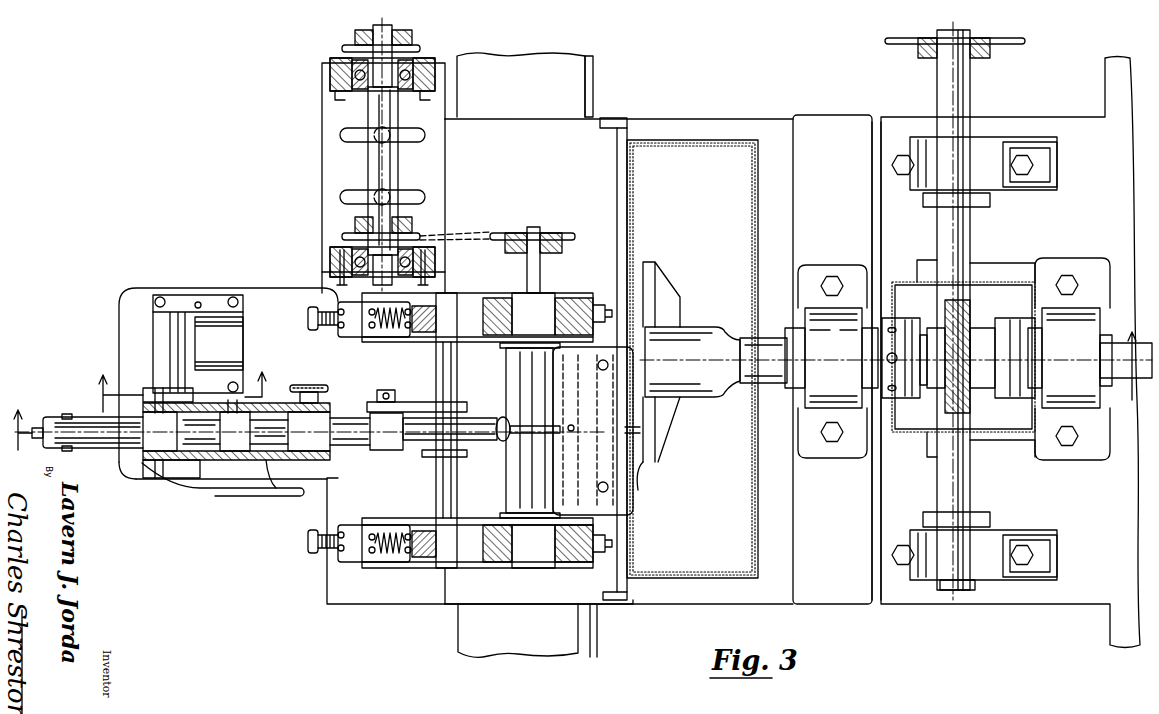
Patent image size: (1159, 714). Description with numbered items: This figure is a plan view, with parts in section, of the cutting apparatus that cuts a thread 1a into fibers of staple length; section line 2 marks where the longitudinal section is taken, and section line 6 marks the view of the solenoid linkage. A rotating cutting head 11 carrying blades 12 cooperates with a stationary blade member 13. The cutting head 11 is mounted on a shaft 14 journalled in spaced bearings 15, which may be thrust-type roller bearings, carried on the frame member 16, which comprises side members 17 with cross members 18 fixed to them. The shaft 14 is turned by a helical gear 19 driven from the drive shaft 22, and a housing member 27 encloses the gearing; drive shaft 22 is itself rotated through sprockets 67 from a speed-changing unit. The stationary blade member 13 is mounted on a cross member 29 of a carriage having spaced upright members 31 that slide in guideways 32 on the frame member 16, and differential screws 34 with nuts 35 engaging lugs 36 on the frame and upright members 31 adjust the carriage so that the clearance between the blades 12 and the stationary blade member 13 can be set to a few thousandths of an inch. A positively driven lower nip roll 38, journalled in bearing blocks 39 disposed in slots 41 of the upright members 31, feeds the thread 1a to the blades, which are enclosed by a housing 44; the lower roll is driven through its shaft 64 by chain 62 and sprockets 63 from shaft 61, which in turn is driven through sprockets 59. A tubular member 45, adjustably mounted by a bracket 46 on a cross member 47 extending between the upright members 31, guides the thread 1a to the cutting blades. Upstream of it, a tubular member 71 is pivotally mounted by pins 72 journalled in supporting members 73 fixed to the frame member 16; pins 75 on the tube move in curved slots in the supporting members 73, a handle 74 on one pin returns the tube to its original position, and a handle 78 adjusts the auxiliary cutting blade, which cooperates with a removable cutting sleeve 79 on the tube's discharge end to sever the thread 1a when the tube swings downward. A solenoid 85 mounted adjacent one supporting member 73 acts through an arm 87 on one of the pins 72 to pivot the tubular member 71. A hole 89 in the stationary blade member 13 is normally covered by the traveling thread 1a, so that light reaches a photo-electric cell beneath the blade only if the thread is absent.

The thread 1a is at (45, 420).
The section line 2- 2 is at (572, 407).
The section line 6- 6 is at (182, 385).
The rotating cutting head 11 is at (708, 327).
The blades 12 is at (658, 286).
The stationary blade member 13 is at (640, 462).
The shaft 14 is at (773, 338).
The bearings 15 is at (815, 410).
The frame member 16 is at (320, 596).
The side members 17 is at (693, 124).
The cross members 18 is at (831, 124).
The helical gear 19 is at (972, 324).
The drive shaft 22 is at (964, 80).
The housing member 27 is at (898, 284).
The cross member 29 is at (618, 293).
The upright members 31 is at (493, 299).
The guideways 32 is at (418, 342).
The differential screws 34 is at (308, 316).
The nuts 35 is at (408, 332).
The lugs 36 is at (335, 300).
The lower nip roll 38 is at (530, 402).
The bearing blocks 39 is at (545, 300).
The slots 41 is at (510, 335).
The housing 44 is at (758, 197).
The tubular member 45 is at (488, 418).
The bracket 46 is at (390, 450).
The cross member 47 is at (455, 480).
The sprockets 59 is at (355, 34).
The shaft 61 is at (367, 170).
The chain 62 is at (461, 232).
The sprockets 63 is at (355, 232).
The shaft 64 is at (533, 228).
The sprockets 67 is at (896, 39).
The tubular member 71 is at (94, 440).
The pins 72 is at (143, 393).
The supporting members 73 is at (183, 430).
The handle 74 is at (220, 490).
The pins 75 is at (238, 455).
The handle 78 is at (306, 385).
The cutting sleeve 79 is at (262, 470).
The solenoid 85 is at (206, 328).
The arm 87 is at (162, 384).
The hole 89 is at (574, 425).